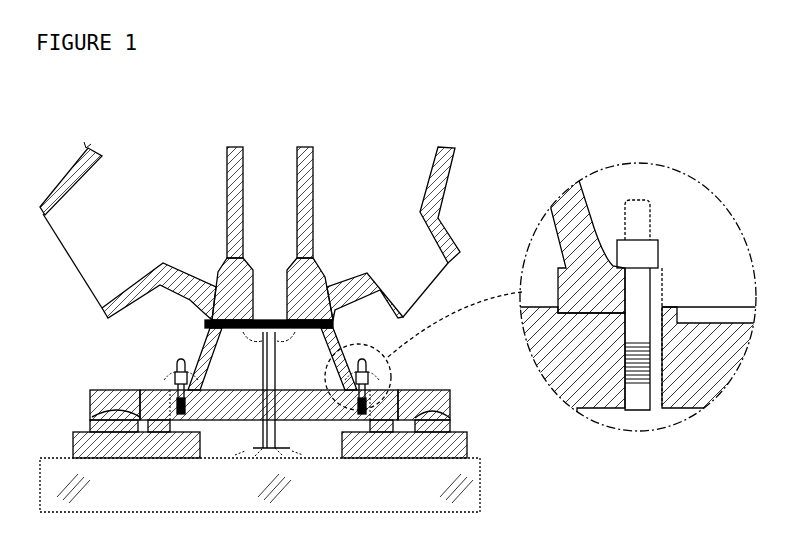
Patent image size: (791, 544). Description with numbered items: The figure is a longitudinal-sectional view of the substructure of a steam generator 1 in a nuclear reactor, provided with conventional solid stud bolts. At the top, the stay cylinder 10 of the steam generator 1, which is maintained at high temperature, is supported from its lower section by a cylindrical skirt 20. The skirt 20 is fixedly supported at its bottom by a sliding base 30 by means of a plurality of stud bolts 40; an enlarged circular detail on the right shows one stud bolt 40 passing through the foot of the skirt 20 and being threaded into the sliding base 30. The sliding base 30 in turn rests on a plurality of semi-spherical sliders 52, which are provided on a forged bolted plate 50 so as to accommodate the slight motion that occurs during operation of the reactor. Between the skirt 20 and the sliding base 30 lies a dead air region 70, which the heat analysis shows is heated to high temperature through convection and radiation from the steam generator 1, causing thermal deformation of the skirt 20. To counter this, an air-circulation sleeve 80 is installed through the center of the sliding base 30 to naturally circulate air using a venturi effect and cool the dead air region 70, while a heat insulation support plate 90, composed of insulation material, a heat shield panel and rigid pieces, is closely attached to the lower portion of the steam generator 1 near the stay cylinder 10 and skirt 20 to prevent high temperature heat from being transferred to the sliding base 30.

The steam generator 1 is at (388, 112).
The stay cylinder 10 is at (451, 177).
The skirt 20 is at (205, 340).
The sliding base 30 is at (315, 420).
The stud bolt 40 is at (178, 362).
The forged bolted plate 50 is at (78, 448).
The semi-spherical slider 52 is at (107, 417).
The dead air region 70 is at (227, 322).
The air-circulation sleeve 80 is at (262, 430).
The heat insulation support plate 90 is at (312, 318).